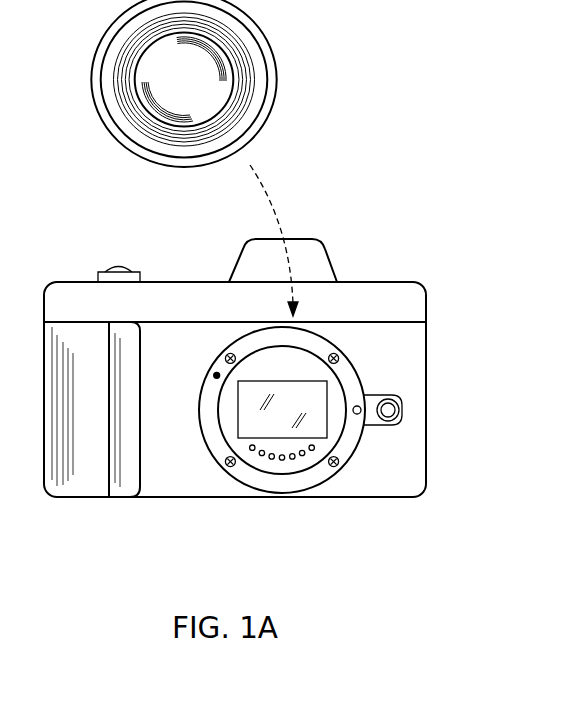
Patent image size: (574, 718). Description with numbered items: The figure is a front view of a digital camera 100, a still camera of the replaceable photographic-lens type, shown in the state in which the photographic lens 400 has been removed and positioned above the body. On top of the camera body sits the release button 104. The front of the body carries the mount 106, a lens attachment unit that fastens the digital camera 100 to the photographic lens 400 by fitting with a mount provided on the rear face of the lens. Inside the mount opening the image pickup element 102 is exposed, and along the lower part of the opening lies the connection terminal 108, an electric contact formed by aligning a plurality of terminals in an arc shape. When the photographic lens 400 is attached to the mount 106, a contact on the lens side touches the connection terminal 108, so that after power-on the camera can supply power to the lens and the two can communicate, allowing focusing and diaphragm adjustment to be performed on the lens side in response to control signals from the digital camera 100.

The digital camera 100 is at (367, 498).
The image pickup element 102 is at (238, 416).
The release button 104 is at (120, 270).
The mount 106 is at (362, 373).
The connection terminal 108 is at (274, 458).
The photographic lens 400 is at (276, 93).